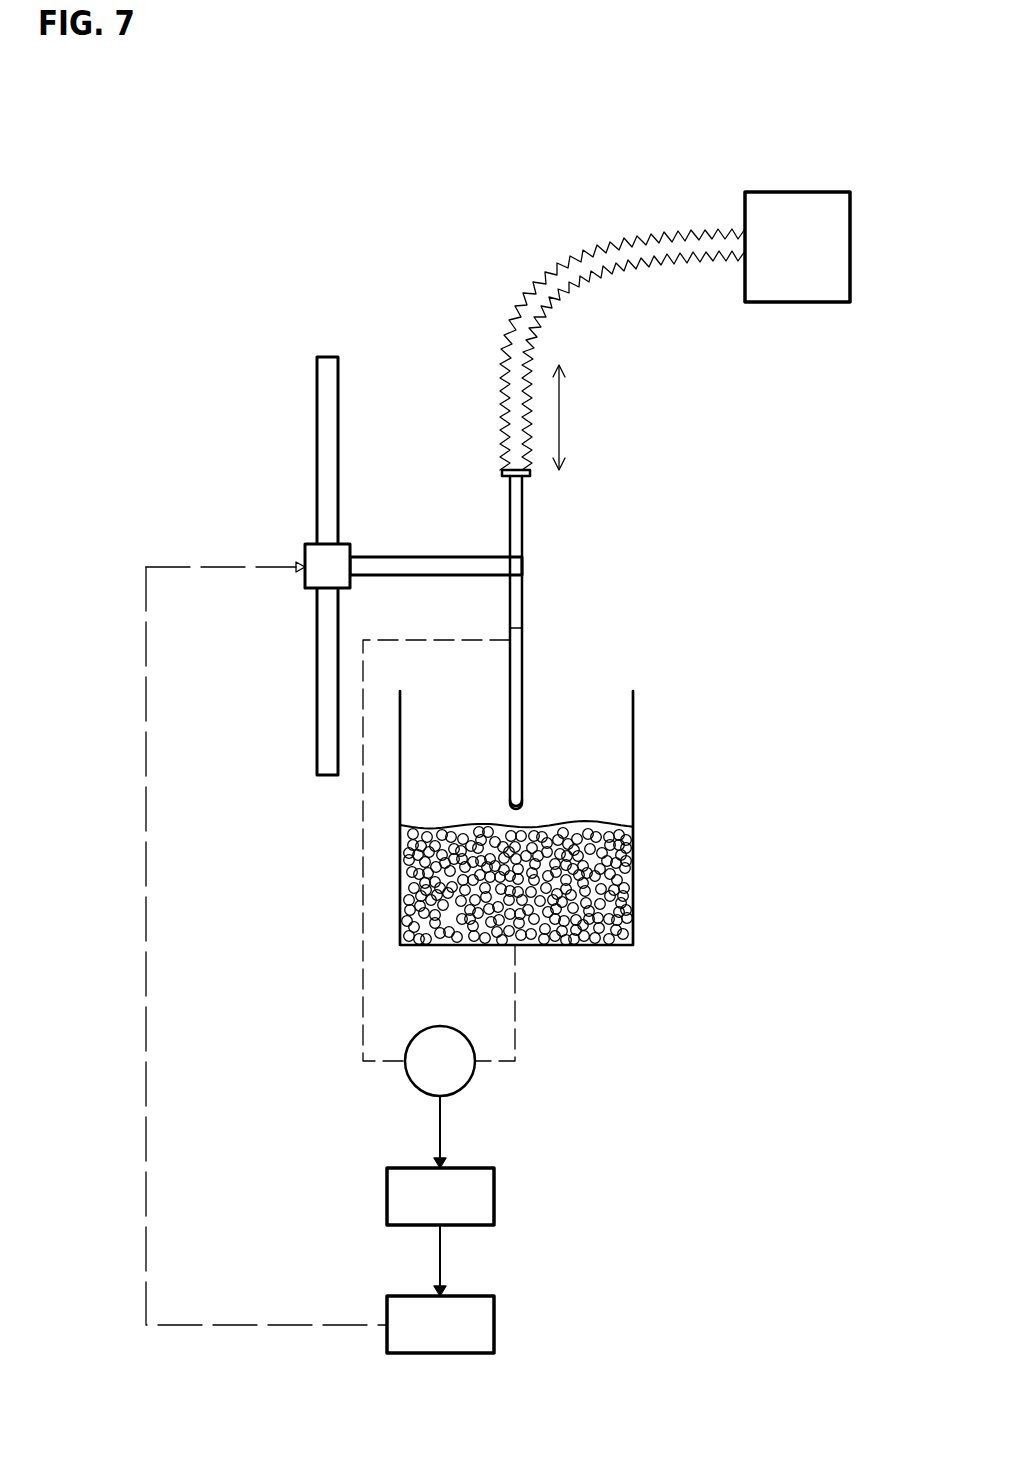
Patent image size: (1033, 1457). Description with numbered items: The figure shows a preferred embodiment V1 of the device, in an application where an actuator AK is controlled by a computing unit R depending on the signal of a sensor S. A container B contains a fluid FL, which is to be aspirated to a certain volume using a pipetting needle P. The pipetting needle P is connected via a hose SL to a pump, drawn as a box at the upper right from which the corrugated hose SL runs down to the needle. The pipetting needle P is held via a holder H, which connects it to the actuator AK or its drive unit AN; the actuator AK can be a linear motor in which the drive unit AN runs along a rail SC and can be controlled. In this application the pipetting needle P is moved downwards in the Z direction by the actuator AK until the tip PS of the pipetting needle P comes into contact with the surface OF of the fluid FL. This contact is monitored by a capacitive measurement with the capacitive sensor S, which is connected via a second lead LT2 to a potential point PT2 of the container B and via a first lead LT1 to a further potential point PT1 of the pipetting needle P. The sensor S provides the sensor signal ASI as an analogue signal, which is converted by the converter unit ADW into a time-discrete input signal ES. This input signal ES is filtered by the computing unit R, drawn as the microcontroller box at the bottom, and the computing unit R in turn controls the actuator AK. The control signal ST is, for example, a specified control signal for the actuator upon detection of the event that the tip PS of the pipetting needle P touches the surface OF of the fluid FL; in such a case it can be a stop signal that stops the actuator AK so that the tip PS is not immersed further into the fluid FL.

The preferred embodiment of the device V1 is at (660, 140).
The hose SL is at (573, 264).
The pipetting needle P is at (822, 302).
The Z direction Z is at (561, 420).
The rail SC is at (316, 430).
The holder H is at (415, 566).
The drive unit AN is at (305, 556).
The actuator AK is at (296, 588).
The potential point of the pipetting needle PT1 is at (515, 633).
The control signal ST is at (146, 1158).
The first lead LT1 is at (363, 925).
The second lead LT2 is at (517, 1031).
The container B is at (635, 729).
The fluid FL is at (621, 876).
The surface of the fluid OF is at (468, 829).
The tip of the pipetting needle PS is at (521, 809).
The potential point of the container PT2 is at (516, 947).
The sensor S is at (406, 1078).
The sensor signal ASI is at (441, 1134).
The converter unit ADW is at (440, 1196).
The input signal ES is at (441, 1266).
The computing unit R is at (495, 1326).